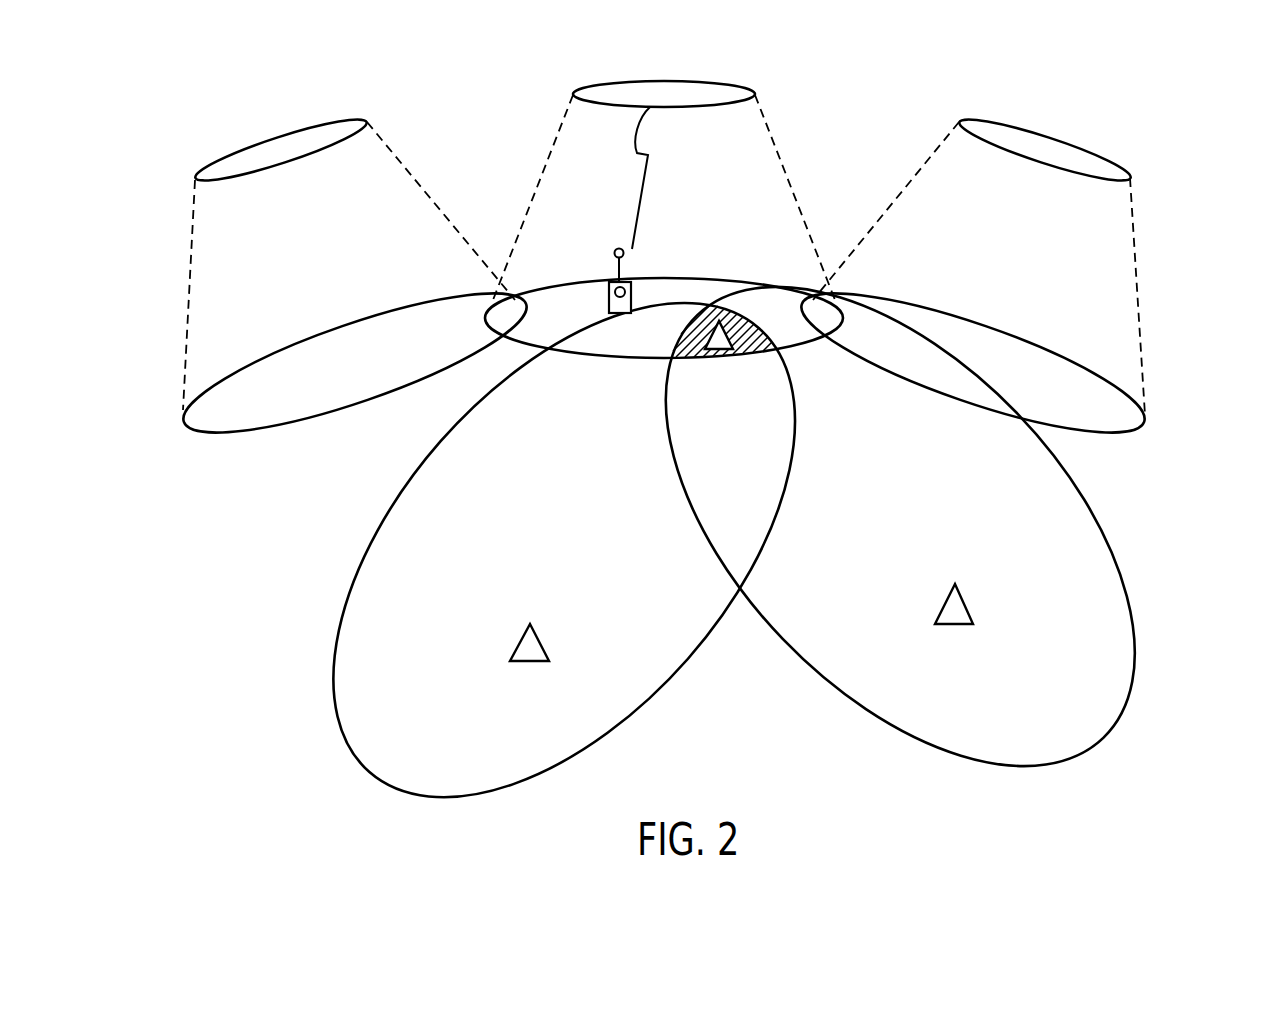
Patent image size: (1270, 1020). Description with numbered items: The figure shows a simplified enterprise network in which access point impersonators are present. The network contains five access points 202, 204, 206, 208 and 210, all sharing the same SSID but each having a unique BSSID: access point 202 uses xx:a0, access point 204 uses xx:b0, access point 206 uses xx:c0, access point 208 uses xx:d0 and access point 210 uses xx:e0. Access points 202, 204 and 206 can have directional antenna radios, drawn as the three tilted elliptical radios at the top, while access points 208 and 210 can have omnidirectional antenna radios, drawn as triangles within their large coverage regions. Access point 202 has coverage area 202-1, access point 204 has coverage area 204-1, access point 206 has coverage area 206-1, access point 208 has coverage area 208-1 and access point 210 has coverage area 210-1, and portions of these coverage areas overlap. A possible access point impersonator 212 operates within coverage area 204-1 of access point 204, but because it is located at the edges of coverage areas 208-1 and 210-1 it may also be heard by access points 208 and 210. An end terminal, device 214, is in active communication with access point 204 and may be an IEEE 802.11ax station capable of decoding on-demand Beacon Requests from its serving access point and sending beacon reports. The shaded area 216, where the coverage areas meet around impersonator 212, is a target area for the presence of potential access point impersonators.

The access point 202 is at (282, 150).
The access point 204 is at (663, 93).
The access point 206 is at (1045, 148).
The coverage area 202-1 is at (217, 434).
The coverage area 204-1 is at (807, 348).
The coverage area 206-1 is at (1101, 375).
The access point 208 is at (528, 663).
The access point 210 is at (951, 626).
The coverage area 208-1 is at (345, 705).
The coverage area 210-1 is at (1128, 598).
The access point impersonator 212 is at (717, 358).
The end terminal (device) 214 is at (618, 313).
The shaded area 216 is at (752, 338).